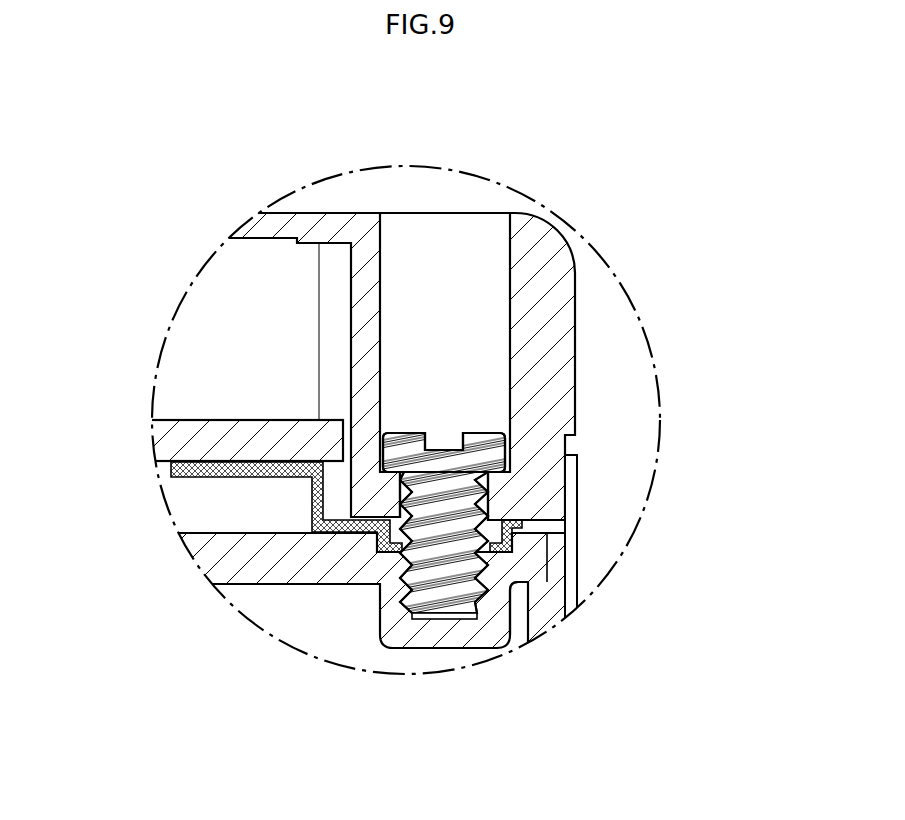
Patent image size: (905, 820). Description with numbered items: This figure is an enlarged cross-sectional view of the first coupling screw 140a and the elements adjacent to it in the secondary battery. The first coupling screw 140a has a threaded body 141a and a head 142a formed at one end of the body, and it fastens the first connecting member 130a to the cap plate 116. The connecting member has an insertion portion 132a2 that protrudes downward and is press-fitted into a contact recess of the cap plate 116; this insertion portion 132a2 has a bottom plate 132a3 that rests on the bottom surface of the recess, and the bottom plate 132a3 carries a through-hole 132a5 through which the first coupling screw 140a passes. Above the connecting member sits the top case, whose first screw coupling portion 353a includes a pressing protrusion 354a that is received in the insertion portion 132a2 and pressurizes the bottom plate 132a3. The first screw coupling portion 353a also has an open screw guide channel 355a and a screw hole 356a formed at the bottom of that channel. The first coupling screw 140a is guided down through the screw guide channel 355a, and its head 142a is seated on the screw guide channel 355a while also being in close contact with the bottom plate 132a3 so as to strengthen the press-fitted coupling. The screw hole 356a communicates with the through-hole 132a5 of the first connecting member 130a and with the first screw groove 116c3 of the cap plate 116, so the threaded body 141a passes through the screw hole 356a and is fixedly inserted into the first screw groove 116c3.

The screw guide channel 355a is at (387, 283).
The screw hole 356a is at (460, 312).
The first coupling screw 140a is at (393, 492).
The first screw coupling portion 353a is at (660, 223).
The head 142a is at (503, 434).
The pressing protrusion 354a is at (493, 498).
The cap plate 116 is at (215, 558).
The first connecting member 130a is at (300, 548).
The insertion portion 132a2 is at (358, 548).
The bottom plate 132a3 is at (383, 553).
The threaded body 141a is at (460, 432).
The first screw groove 116c3 is at (468, 600).
The through-hole 132a5 is at (510, 598).